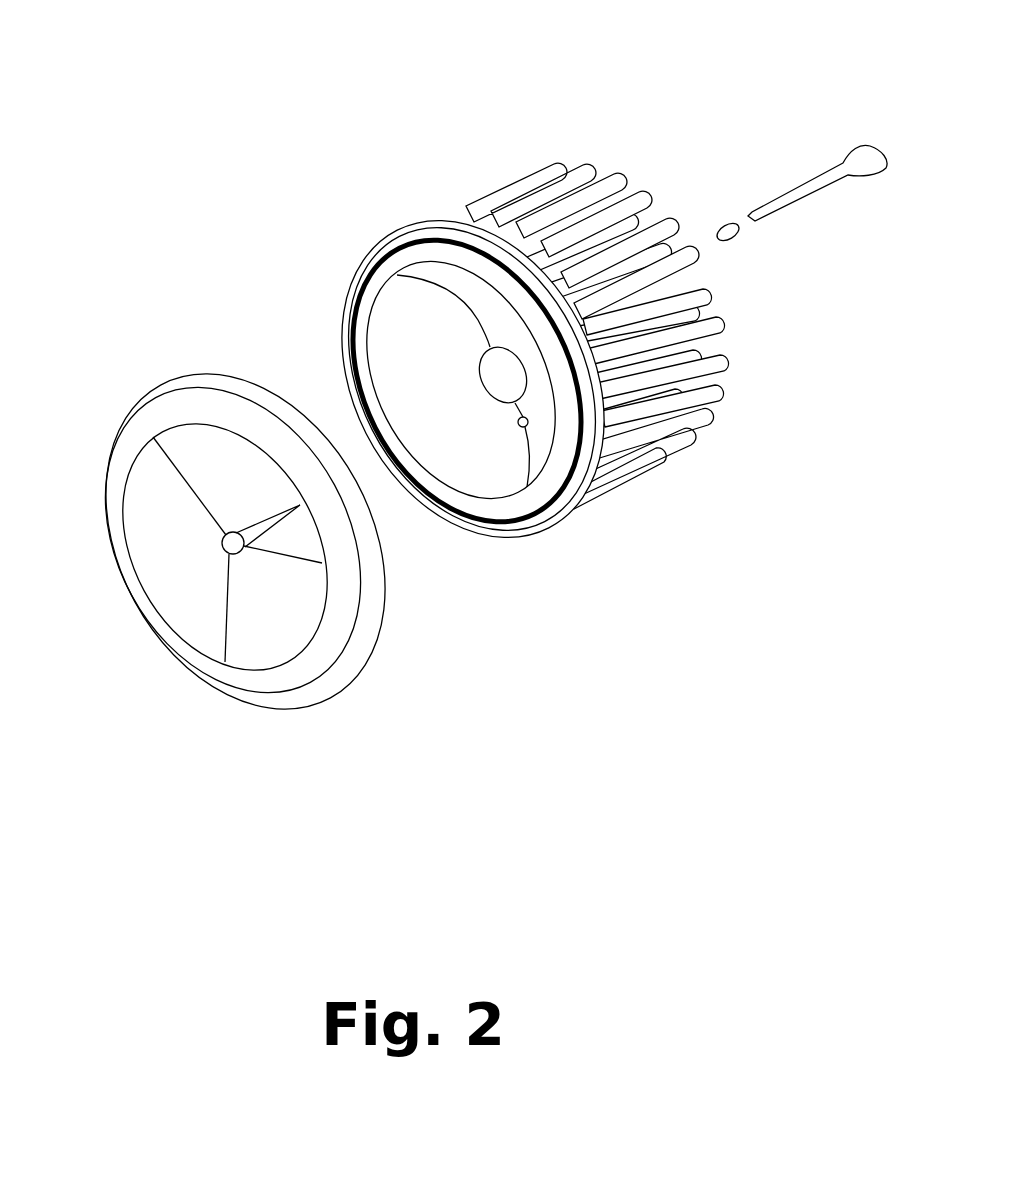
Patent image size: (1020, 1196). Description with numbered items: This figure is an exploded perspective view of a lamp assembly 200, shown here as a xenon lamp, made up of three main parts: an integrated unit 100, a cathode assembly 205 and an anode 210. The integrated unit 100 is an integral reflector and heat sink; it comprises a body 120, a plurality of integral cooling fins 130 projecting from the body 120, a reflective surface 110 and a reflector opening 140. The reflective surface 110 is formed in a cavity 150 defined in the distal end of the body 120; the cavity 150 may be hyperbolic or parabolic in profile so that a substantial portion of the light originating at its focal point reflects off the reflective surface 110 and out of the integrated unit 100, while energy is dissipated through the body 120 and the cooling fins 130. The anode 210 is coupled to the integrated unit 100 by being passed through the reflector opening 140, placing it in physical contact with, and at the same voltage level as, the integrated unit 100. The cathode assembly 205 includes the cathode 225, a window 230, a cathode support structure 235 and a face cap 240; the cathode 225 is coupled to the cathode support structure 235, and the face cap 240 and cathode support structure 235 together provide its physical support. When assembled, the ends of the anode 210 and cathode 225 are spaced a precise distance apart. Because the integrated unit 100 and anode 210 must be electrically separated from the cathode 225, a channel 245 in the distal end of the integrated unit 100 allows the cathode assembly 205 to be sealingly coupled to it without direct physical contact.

The integrated unit 100 is at (621, 516).
The reflective surface 110 is at (423, 338).
The body 120 is at (622, 232).
The integral cooling fins 130 is at (511, 186).
The reflector opening 140 is at (483, 386).
The cavity 150 is at (426, 378).
The lamp assembly 200 is at (640, 709).
The cathode assembly 205 is at (163, 647).
The anode 210 is at (843, 158).
The cathode 225 is at (224, 550).
The window 230 is at (285, 610).
The cathode support structure 235 is at (295, 562).
The face cap 240 is at (249, 378).
The channel 245 is at (397, 233).